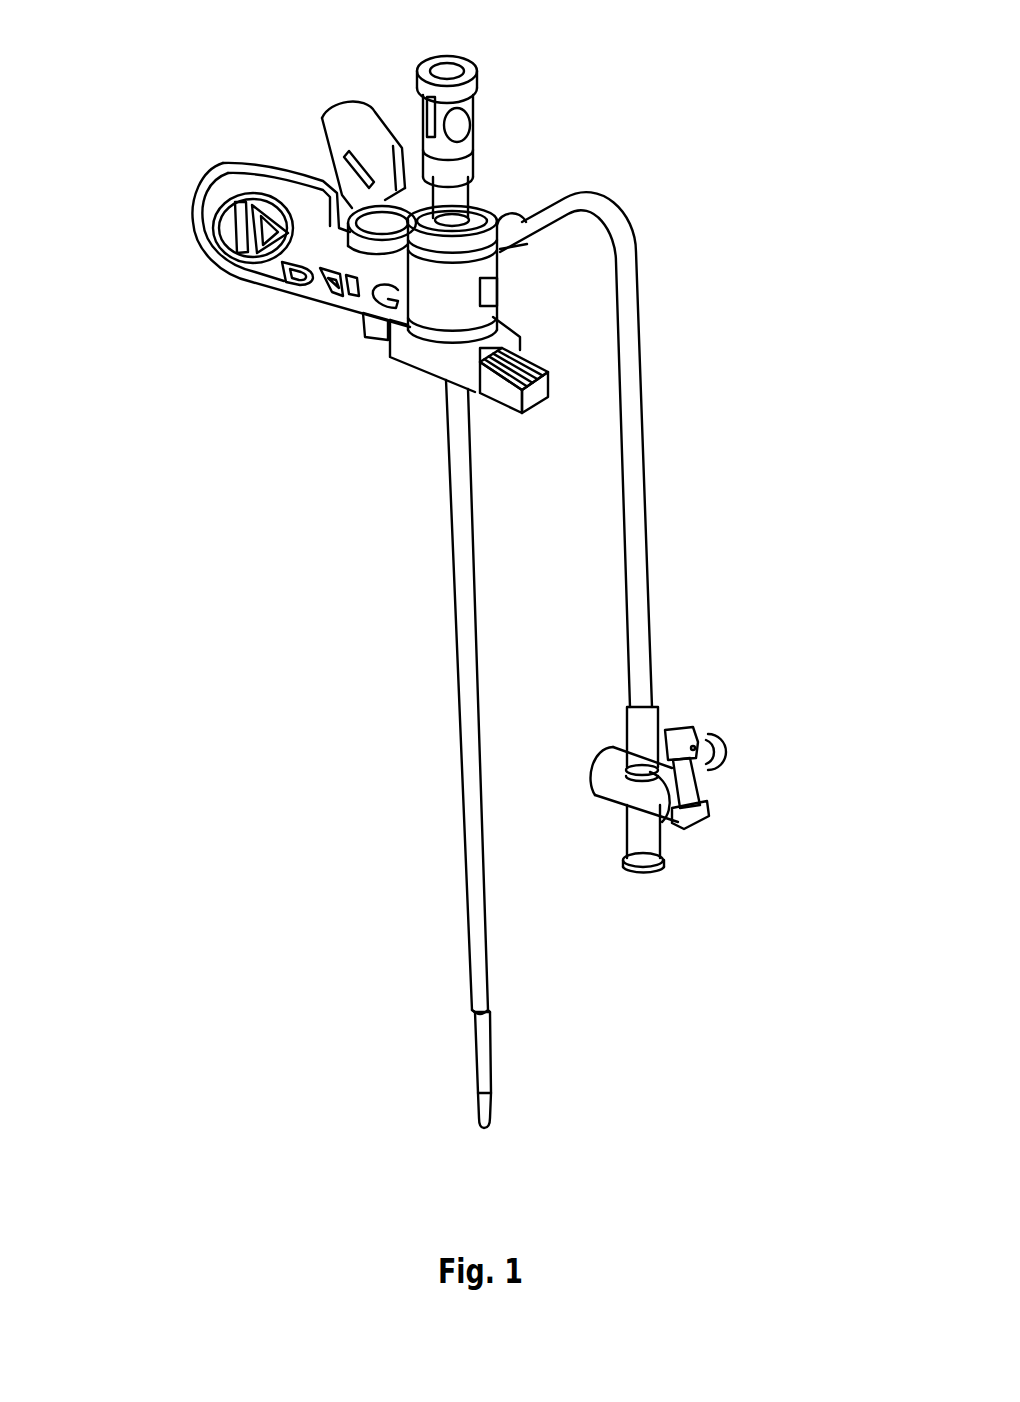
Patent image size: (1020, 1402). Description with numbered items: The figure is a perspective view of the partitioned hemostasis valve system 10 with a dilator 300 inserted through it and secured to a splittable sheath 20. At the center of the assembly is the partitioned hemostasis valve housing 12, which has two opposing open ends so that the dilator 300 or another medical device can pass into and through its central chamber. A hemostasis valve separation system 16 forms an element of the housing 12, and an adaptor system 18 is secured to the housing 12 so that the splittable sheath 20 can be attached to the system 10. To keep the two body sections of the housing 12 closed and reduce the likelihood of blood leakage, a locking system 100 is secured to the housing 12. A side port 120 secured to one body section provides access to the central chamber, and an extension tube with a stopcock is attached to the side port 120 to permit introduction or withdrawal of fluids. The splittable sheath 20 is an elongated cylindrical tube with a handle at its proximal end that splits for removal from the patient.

The partitioned hemostasis valve system 10 is at (225, 458).
The partitioned hemostasis valve housing 12 is at (430, 293).
The hemostasis valve separation system 16 is at (170, 240).
The adaptor system 18 is at (413, 378).
The splittable sheath 20 is at (460, 598).
The locking system 100 is at (493, 290).
The side port 120 is at (513, 242).
The dilator 300 is at (453, 103).